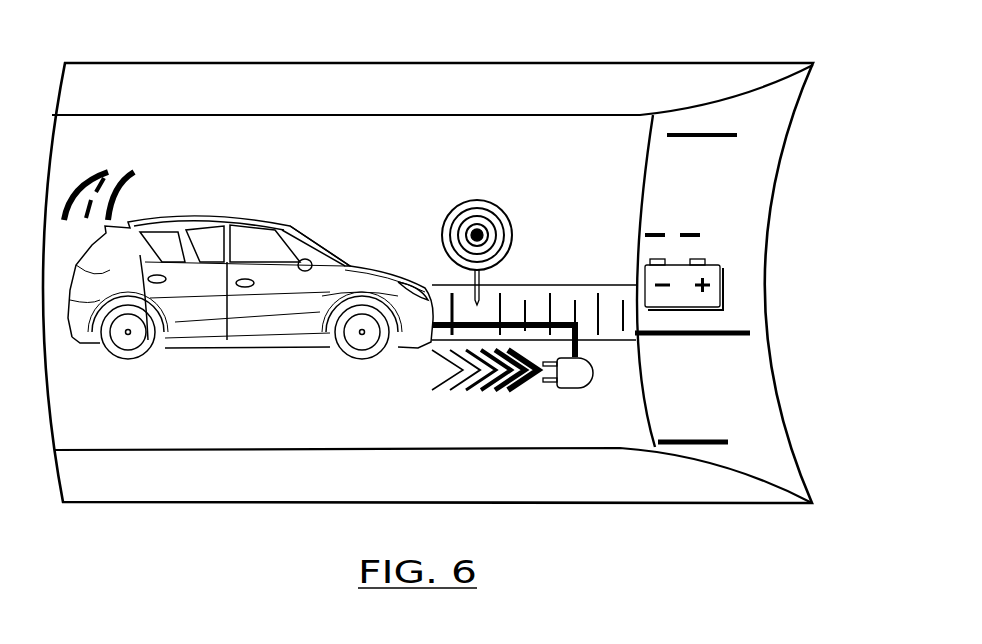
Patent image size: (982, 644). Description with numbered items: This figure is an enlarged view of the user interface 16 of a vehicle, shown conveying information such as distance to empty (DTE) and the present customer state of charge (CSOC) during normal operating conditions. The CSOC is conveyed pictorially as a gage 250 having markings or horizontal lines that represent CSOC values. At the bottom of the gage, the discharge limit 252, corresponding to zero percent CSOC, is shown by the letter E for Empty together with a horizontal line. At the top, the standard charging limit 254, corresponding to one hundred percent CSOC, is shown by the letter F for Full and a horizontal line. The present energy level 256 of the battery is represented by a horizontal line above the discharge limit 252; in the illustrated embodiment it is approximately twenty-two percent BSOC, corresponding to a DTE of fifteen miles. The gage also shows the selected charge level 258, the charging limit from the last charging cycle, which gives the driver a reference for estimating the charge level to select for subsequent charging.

The user interface 16 is at (713, 63).
The gage 250 is at (766, 259).
The discharge limit 252 is at (705, 438).
The standard charging limit 254 is at (717, 130).
The present energy level 256 is at (727, 333).
The selected charge level 258 is at (690, 230).